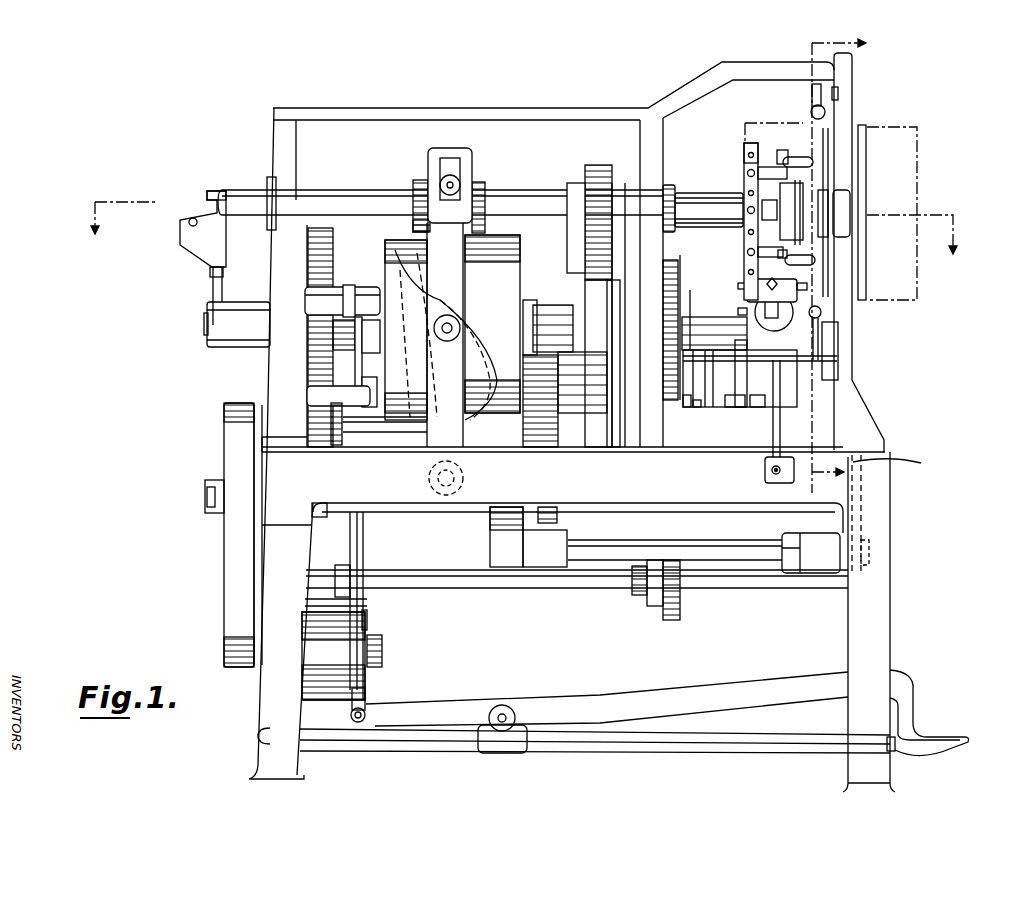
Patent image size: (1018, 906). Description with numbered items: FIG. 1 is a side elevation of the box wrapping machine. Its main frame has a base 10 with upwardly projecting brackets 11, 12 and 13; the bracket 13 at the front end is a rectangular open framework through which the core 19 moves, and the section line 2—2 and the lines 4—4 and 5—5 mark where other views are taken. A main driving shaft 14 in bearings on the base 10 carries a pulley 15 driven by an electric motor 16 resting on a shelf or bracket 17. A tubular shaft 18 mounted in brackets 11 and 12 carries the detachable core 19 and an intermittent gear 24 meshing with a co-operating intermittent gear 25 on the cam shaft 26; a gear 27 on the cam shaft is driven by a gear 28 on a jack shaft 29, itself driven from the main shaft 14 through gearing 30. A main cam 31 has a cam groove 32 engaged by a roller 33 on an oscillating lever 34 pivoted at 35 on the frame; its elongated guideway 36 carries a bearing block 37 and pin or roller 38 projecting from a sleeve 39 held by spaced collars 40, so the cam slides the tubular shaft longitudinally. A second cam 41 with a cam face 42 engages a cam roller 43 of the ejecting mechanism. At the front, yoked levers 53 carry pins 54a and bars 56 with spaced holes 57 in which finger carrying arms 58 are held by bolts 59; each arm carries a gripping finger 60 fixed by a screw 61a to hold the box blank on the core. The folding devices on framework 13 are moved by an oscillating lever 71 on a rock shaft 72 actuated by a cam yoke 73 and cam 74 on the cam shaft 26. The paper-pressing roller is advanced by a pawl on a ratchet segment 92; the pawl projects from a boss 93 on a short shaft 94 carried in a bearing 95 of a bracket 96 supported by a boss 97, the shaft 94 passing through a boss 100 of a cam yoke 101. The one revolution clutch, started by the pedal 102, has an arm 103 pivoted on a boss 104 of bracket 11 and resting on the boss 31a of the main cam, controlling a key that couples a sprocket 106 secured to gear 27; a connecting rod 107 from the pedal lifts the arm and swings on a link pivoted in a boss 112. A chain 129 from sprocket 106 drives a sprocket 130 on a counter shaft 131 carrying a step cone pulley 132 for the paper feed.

The section line 2— 2 is at (524, 211).
The line 4— 4 is at (779, 493).
The line 5— 5 is at (846, 264).
The base 10 is at (880, 605).
The bracket 11 is at (290, 133).
The bracket 12 is at (660, 138).
The bracket 13 is at (845, 327).
The main driving shaft 14 is at (395, 507).
The pulley 15 is at (224, 448).
The electric motor 16 is at (382, 652).
The shelf or bracket 17 is at (358, 722).
The tubular shaft 18 is at (320, 198).
The core or form 19 is at (866, 180).
The intermittent gear 24 is at (598, 165).
The co-operating intermittent gear 25 is at (585, 290).
The cam shaft 26 is at (207, 320).
The gear 27 is at (317, 335).
The gear 28 is at (312, 407).
The jack shaft 29 is at (378, 433).
The gearing 30 is at (555, 448).
The main cam 31 is at (390, 279).
The boss 31a is at (369, 362).
The cam groove 32 is at (392, 250).
The roller 33 is at (458, 324).
The oscillating lever 34 is at (430, 152).
The pivot 35 is at (450, 495).
The elongated guideway 36 is at (450, 160).
The bearing block 37 is at (458, 182).
The pin or roller 38 is at (457, 187).
The sleeve 39 is at (415, 227).
The spaced collars 40 is at (413, 195).
The second cam 41 is at (213, 283).
The cam face 42 is at (225, 250).
The cam roller 43 is at (190, 220).
The lever 53 is at (748, 235).
The pin 54a is at (781, 211).
The bar 56 is at (745, 150).
The spaced holes 57 is at (748, 193).
The finger carrying arms 58 is at (747, 168).
The bolts 59 is at (745, 262).
The gripping finger 60 is at (815, 160).
The screw 61a is at (782, 152).
The oscillating lever 71 is at (903, 468).
The rock shaft 72 is at (708, 552).
The cam yoke 73 is at (533, 300).
The cam 74 is at (520, 245).
The ratchet segment 92 is at (768, 357).
The boss 93 is at (755, 407).
The short shaft 94 is at (785, 405).
The bearing 95 is at (733, 407).
The bracket 96 is at (737, 362).
The boss 97 is at (721, 328).
The boss 100 is at (695, 412).
The cam yoke 101 is at (683, 402).
The pedal 102 is at (937, 738).
The arm 103 is at (352, 289).
The boss 104 is at (305, 292).
The sprocket 106 is at (315, 333).
The connecting rod 107 is at (367, 603).
The boss 112 is at (337, 448).
The chain 129 is at (360, 537).
The sprocket 130 is at (348, 575).
The counter shaft 131 is at (494, 580).
The step cone pulley 132 is at (680, 600).